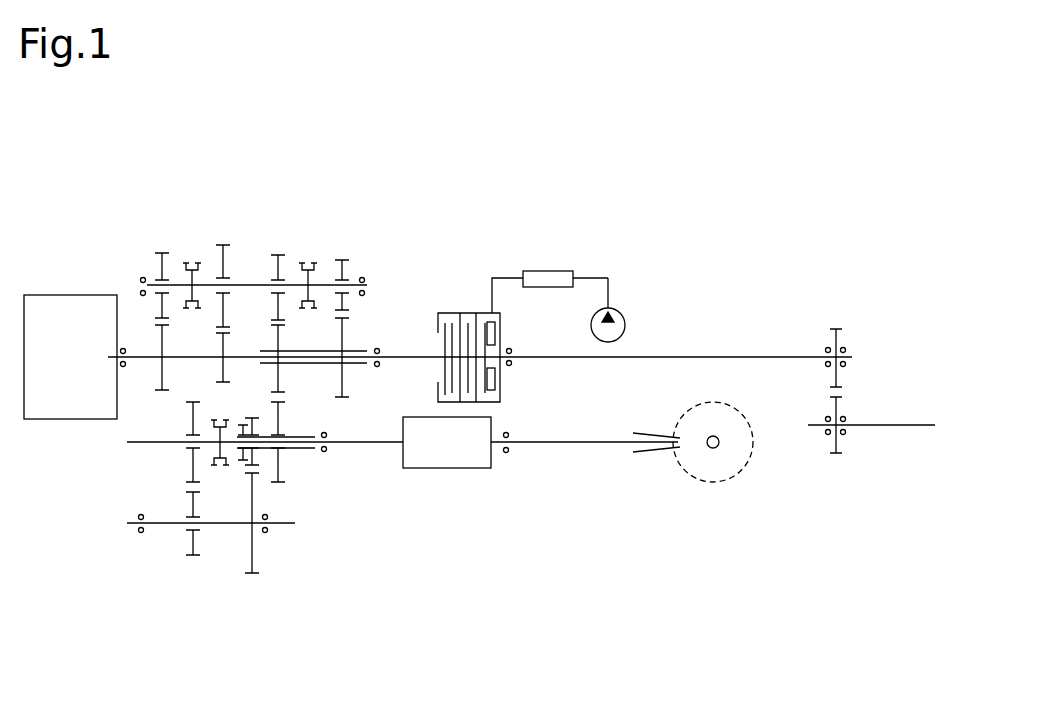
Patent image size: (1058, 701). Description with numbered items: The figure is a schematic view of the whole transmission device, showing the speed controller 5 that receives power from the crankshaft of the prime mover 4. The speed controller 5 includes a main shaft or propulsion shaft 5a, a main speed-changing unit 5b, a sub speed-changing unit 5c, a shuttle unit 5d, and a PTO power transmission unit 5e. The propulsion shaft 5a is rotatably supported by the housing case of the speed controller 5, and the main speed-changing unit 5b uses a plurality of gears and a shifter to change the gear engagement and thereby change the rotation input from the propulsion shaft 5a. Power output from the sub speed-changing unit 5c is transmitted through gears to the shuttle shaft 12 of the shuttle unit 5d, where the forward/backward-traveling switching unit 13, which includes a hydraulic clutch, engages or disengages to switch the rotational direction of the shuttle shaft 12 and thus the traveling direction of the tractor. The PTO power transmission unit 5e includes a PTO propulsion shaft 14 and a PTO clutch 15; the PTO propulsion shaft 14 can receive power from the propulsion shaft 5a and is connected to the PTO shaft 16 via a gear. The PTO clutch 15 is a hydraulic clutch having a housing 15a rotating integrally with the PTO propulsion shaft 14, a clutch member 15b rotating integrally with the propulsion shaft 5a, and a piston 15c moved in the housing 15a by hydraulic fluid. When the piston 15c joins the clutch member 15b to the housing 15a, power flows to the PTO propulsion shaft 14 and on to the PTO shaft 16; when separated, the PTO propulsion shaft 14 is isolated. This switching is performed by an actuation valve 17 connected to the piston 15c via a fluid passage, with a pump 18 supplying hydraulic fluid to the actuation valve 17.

The prime mover 4 is at (80, 420).
The speed controller 5 is at (416, 239).
The main shaft (propulsion shaft) 5a is at (412, 357).
The main speed-changing unit 5b is at (263, 214).
The sub speed-changing unit 5c is at (321, 552).
The shuttle unit 5d is at (479, 480).
The PTO power transmission unit 5e is at (469, 284).
The shuttle shaft 12 is at (613, 445).
The forward/backward-traveling switching unit 13 is at (492, 422).
The PTO propulsion shaft 14 is at (752, 357).
The PTO clutch 15 is at (482, 357).
The housing 15a is at (502, 392).
The clutch member 15b is at (440, 367).
The piston 15c is at (497, 332).
The PTO shaft 16 is at (905, 425).
The actuation valve 17 is at (555, 271).
The pump 18 is at (625, 322).